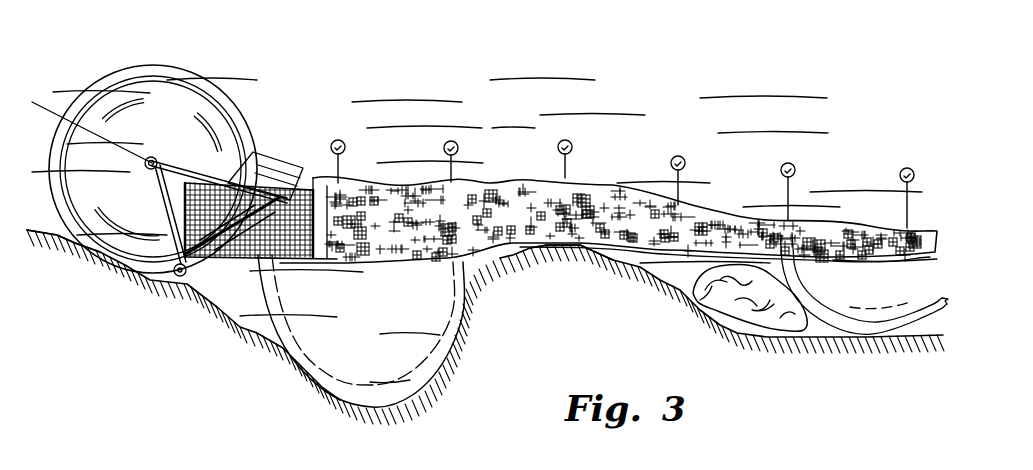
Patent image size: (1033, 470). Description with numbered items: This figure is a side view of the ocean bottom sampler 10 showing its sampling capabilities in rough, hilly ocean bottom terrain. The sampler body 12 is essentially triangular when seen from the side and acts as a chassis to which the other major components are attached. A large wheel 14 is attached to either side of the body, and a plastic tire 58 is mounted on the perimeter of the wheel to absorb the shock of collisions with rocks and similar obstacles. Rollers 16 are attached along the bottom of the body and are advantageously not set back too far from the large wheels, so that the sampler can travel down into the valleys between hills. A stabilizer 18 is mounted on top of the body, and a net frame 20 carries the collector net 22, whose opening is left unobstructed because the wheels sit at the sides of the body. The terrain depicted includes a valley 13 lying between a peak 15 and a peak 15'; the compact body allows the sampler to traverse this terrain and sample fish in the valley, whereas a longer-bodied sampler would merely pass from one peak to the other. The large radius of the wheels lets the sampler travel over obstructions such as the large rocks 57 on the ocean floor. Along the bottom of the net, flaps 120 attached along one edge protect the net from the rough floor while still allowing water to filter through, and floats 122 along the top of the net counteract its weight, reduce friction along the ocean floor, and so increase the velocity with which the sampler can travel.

The ocean bottom sampler 10 is at (448, 100).
The sampler body 12 is at (178, 143).
The valley 13 is at (320, 388).
The large wheels 14 is at (98, 110).
The peak 15 is at (572, 228).
The peak 15' is at (58, 226).
The rollers 16 is at (188, 271).
The stabilizer 18 is at (282, 146).
The net frame 20 is at (176, 199).
The collector net 22 is at (503, 183).
The large rocks 57 is at (747, 335).
The tire 58 is at (147, 68).
The flaps 120 is at (910, 264).
The floats 122 is at (787, 163).